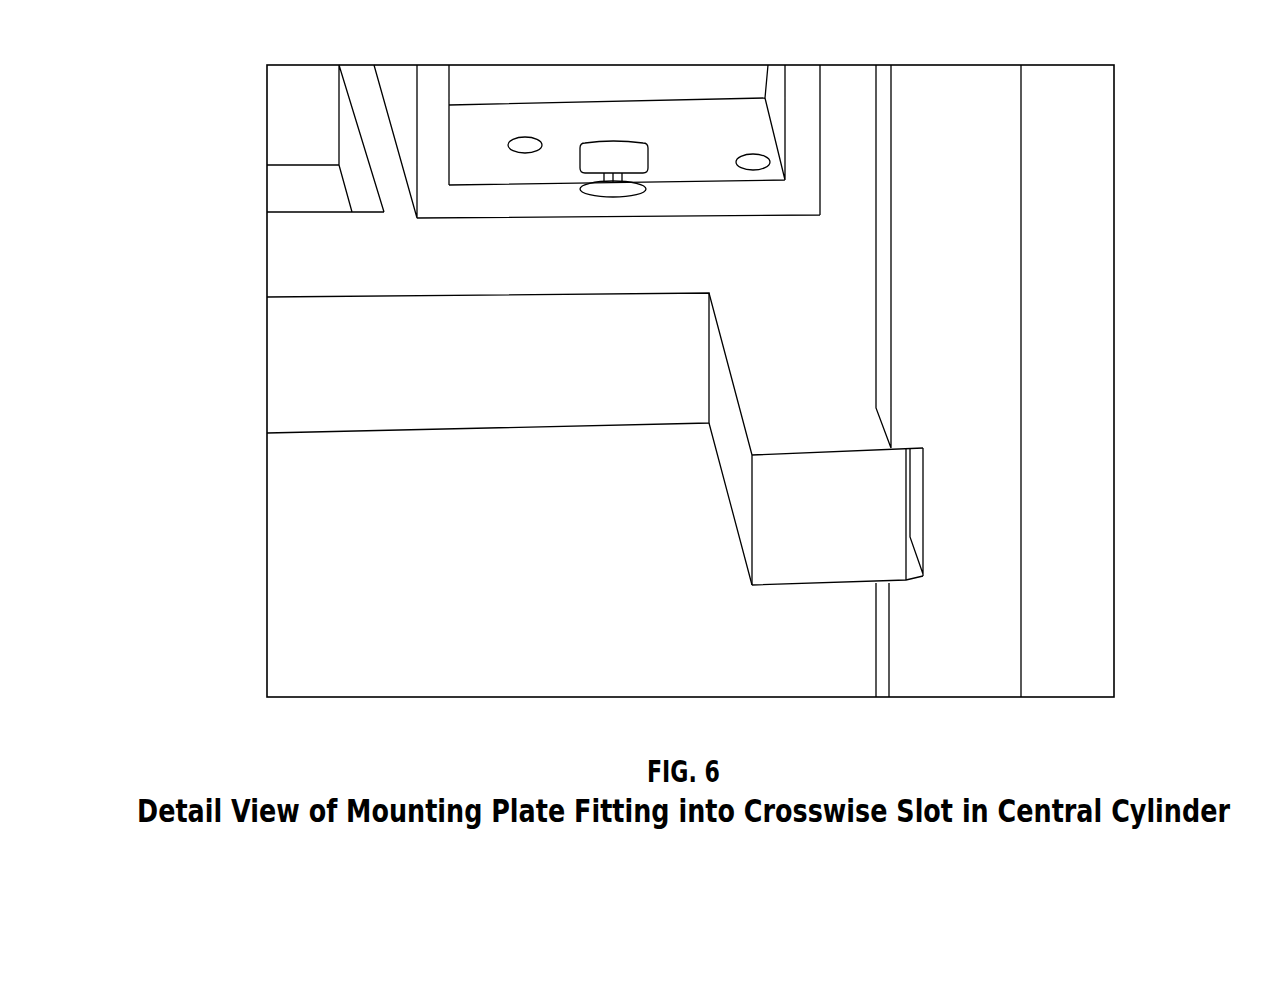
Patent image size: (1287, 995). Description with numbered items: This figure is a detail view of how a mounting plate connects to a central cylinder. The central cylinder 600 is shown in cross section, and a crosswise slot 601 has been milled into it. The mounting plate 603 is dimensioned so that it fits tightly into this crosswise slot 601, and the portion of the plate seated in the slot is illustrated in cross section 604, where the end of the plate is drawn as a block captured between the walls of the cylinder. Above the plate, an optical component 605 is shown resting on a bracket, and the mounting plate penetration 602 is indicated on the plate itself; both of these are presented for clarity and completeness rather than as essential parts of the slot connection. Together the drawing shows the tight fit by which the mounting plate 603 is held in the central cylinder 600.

The central cylinder 600 is at (980, 167).
The crosswise slot 601 is at (924, 525).
The mounting plate penetration 602 is at (288, 369).
The mounting plate 603 is at (788, 342).
The cross section of mounting plate 604 is at (795, 503).
The optical component 605 is at (464, 155).